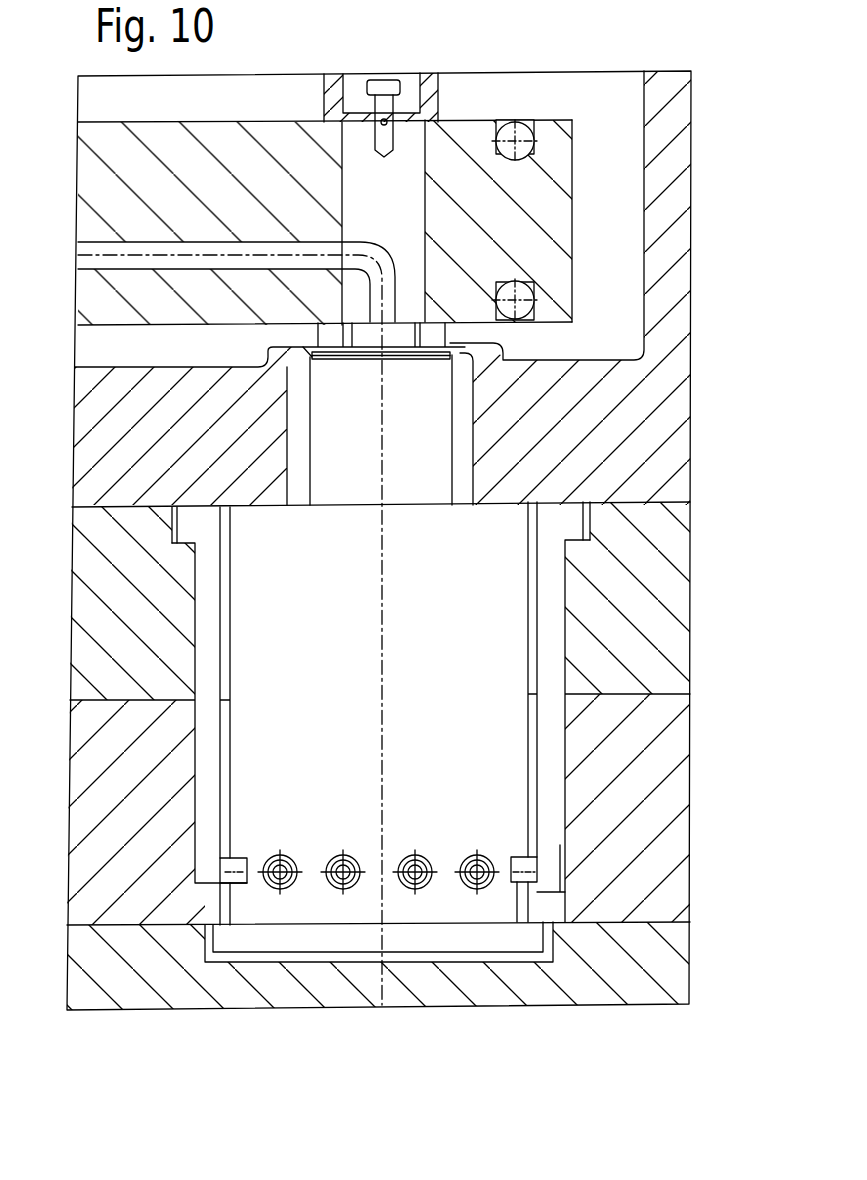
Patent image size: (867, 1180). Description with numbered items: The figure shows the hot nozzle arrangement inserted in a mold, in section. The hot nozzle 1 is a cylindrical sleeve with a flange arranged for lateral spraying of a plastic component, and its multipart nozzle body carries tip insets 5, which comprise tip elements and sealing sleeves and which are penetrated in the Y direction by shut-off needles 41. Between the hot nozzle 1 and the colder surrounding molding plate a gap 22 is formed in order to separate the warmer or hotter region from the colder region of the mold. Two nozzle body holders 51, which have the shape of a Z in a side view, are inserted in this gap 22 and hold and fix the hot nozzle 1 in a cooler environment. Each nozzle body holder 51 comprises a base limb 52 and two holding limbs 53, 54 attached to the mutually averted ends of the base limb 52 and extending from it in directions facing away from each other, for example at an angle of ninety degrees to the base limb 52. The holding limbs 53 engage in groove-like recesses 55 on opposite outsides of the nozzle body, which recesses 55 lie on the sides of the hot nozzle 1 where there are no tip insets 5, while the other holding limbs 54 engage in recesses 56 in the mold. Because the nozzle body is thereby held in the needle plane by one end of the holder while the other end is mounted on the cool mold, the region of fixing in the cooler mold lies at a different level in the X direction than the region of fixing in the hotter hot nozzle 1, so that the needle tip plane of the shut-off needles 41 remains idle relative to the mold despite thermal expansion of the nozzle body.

The hot nozzle 1 is at (445, 893).
The tip insets 5 is at (413, 887).
The gap 22 is at (533, 740).
The shut-off needles 41 is at (468, 857).
The nozzle body holders 51 is at (557, 617).
The base limb 52 is at (613, 690).
The holding limbs 53 is at (532, 868).
The holding limbs 54 is at (178, 507).
The recesses 55 is at (519, 883).
The recesses 56 is at (588, 528).